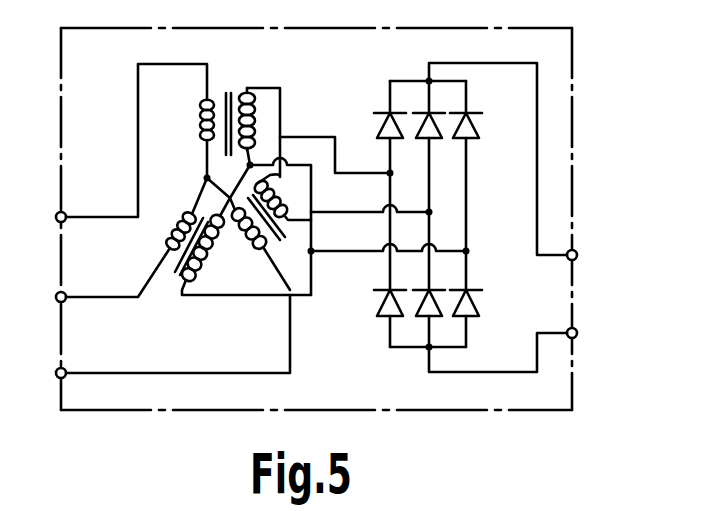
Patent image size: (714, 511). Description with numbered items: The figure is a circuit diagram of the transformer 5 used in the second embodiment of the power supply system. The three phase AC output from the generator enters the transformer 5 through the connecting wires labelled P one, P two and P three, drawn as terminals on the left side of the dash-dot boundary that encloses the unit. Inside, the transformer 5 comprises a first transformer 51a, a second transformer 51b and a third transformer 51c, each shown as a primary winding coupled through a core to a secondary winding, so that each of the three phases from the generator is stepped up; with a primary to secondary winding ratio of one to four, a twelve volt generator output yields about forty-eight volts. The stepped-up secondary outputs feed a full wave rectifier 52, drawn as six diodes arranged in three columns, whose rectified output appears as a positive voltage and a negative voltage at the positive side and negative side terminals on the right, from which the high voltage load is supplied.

The transformer 5 is at (573, 382).
The first transformer 51a is at (230, 92).
The second transformer 51b is at (170, 273).
The third transformer 51c is at (285, 239).
The full wave rectifier 52 is at (414, 350).